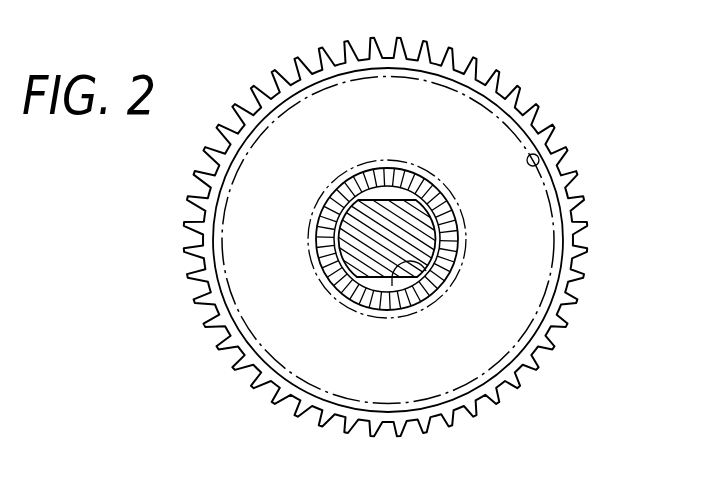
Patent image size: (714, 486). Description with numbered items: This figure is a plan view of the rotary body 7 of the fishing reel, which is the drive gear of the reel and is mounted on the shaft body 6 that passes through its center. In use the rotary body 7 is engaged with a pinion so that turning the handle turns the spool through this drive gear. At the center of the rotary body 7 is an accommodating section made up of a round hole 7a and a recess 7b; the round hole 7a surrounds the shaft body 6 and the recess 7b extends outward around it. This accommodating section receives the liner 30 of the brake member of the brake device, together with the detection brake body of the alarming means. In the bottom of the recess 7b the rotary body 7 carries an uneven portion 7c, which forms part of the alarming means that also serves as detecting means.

The rotary body 7 is at (549, 106).
The round hole 7a is at (410, 262).
The recess 7b is at (539, 163).
The uneven portion 7c is at (445, 213).
The shaft body 6 is at (432, 242).
The liner 30 is at (550, 229).